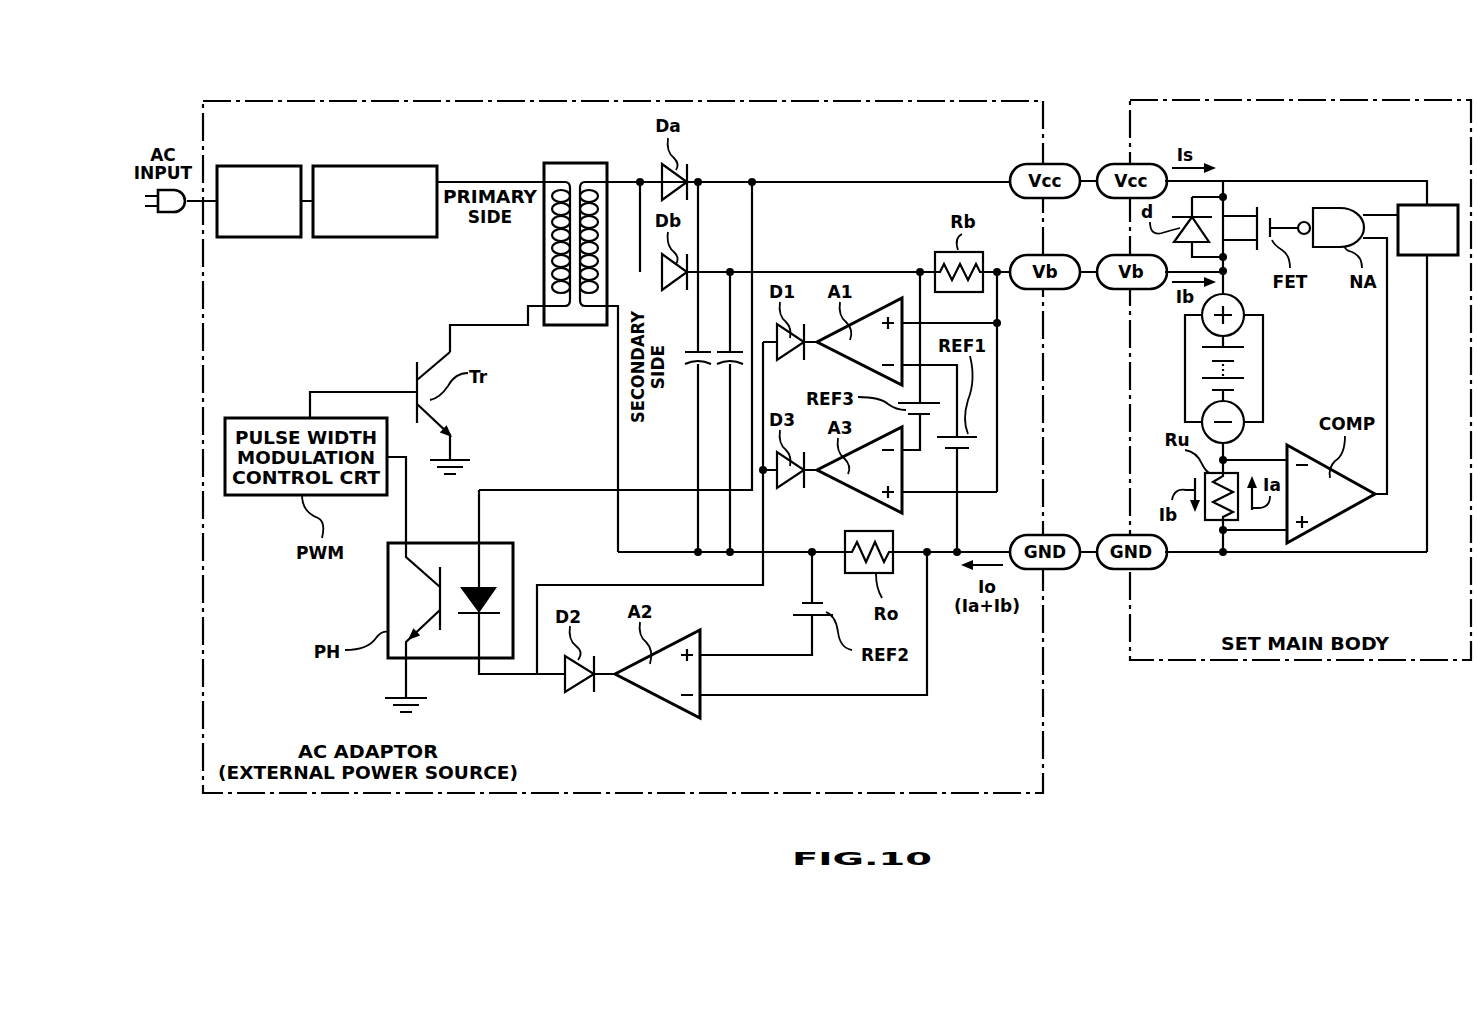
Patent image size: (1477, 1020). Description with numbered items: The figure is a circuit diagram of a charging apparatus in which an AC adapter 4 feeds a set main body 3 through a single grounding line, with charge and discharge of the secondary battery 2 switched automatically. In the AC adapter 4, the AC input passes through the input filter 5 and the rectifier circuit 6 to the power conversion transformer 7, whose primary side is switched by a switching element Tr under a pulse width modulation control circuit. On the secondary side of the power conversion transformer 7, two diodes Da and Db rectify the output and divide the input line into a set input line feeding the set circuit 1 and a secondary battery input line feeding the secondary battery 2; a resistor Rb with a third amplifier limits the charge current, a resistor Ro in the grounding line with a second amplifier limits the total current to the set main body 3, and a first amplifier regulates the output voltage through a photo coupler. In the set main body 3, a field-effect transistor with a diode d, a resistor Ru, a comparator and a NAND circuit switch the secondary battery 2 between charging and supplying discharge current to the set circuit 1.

The set circuit 1 is at (1440, 205).
The secondary battery 2 is at (1263, 397).
The set main body 3 is at (1303, 100).
The AC adapter 4 is at (797, 101).
The input filter 5 is at (253, 166).
The rectifier circuit 6 is at (353, 166).
The power conversion transformer 7 is at (565, 163).